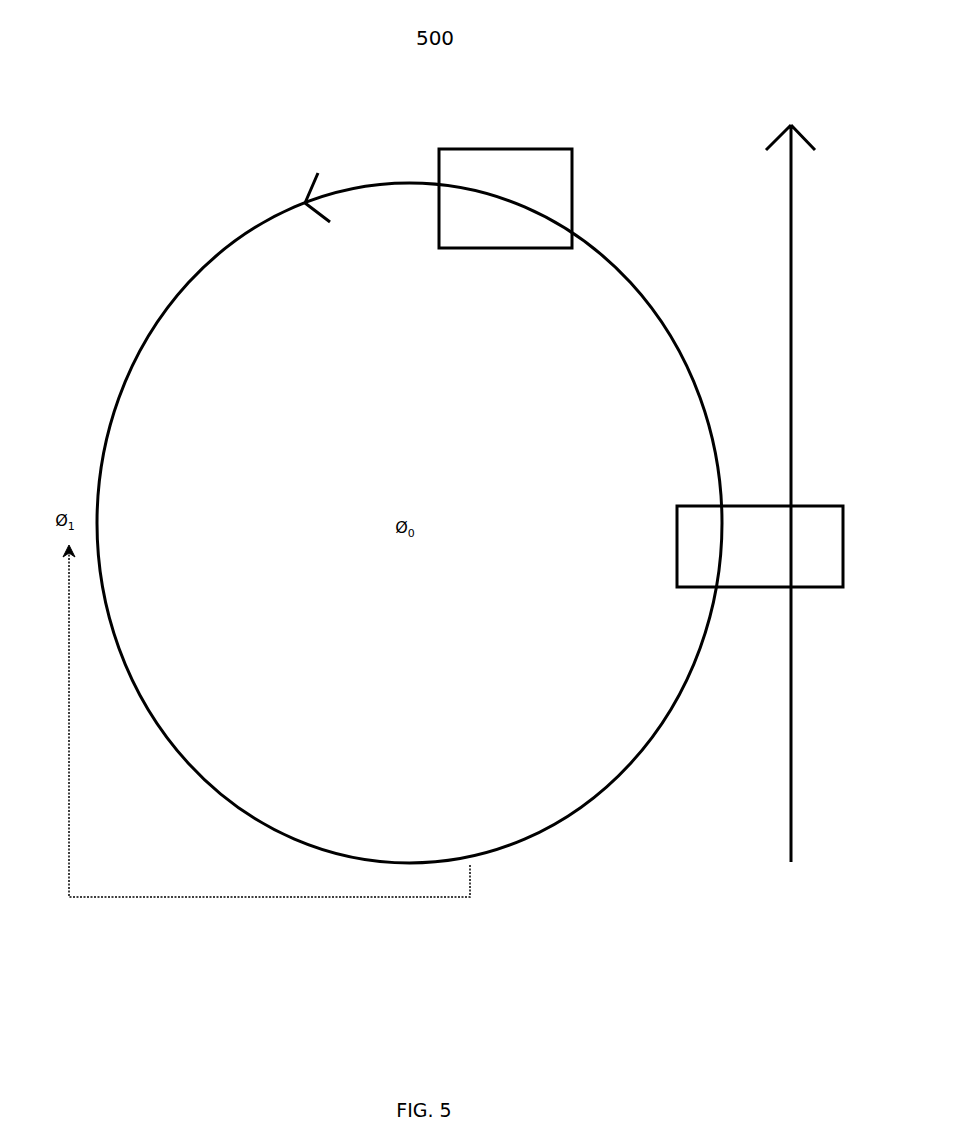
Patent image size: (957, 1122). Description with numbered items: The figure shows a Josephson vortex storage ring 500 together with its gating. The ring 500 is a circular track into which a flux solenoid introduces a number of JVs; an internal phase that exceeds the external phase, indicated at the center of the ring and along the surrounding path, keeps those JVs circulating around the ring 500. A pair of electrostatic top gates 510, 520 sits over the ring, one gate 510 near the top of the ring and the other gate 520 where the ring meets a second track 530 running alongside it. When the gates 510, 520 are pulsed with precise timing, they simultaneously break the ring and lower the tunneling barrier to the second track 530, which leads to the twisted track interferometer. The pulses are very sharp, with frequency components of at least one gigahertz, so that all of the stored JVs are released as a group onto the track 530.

The JV storage ring 500 is at (250, 228).
The electrostatic top gate 510 is at (573, 183).
The electrostatic top gate 520 is at (816, 500).
The second track 530 is at (797, 285).